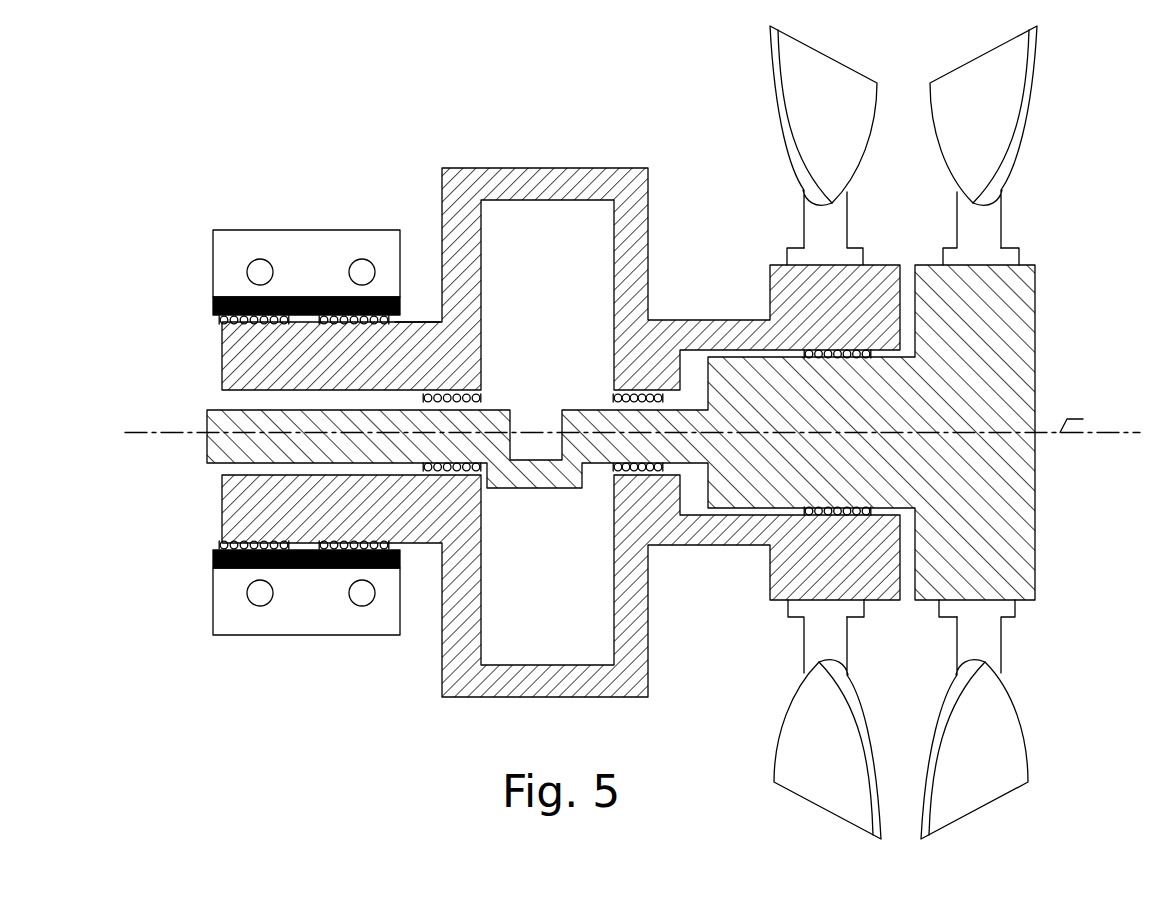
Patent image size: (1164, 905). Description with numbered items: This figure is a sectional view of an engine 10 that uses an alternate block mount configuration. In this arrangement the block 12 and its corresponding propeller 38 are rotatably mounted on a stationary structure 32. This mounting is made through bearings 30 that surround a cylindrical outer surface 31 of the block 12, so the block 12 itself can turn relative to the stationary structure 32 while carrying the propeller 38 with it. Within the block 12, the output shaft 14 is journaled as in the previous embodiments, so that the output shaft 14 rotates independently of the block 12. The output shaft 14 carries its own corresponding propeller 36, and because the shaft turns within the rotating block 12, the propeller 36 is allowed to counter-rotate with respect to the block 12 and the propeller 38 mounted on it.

The engine 10 is at (632, 432).
The block 12 is at (648, 242).
The output shaft 14 is at (1027, 421).
The bearings 30 is at (220, 321).
The cylindrical outer surface 31 is at (412, 322).
The stationary structure 32 is at (268, 233).
The propeller 36 is at (995, 117).
The propeller 38 is at (803, 102).